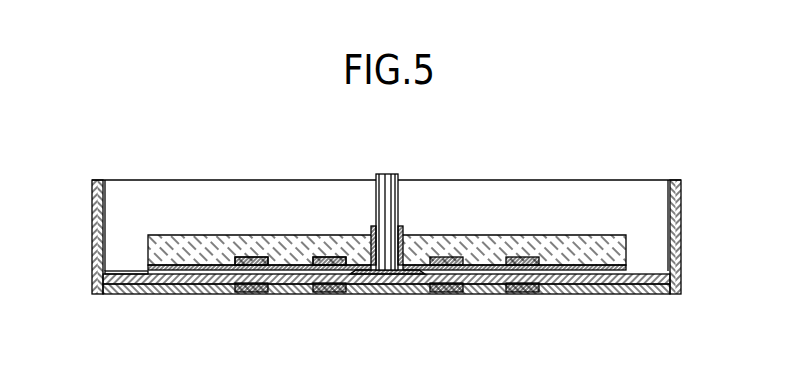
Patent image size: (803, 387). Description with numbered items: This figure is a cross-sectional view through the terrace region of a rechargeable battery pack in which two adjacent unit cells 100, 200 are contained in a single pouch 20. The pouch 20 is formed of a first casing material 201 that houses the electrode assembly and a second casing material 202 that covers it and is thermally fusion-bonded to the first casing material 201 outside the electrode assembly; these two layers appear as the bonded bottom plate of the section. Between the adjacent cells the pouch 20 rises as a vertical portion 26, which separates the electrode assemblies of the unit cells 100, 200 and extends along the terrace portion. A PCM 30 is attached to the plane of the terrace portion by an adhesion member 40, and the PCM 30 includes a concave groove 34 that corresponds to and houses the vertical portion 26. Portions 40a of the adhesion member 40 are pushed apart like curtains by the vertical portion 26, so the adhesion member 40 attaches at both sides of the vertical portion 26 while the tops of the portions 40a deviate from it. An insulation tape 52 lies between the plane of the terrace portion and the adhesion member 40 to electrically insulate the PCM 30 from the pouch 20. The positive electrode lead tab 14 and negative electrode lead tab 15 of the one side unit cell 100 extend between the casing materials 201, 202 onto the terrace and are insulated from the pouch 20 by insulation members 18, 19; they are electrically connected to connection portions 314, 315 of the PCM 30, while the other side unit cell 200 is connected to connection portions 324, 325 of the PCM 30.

The unit cell 100 is at (91, 233).
The unit cell 200 is at (683, 232).
The pouch 20 is at (386, 324).
The first casing material 201 is at (157, 284).
The second casing material 202 is at (175, 339).
The insulation tape 52 is at (120, 271).
The adhesion member 40 is at (200, 271).
The portions of the adhesion member 40a is at (371, 228).
The concave groove 34 is at (390, 279).
The PCM 30 is at (598, 246).
The vertical portion 26 is at (387, 174).
The positive electrode lead tab 14 is at (248, 266).
The negative electrode lead tab 15 is at (325, 266).
The insulation member 18 is at (263, 293).
The insulation member 19 is at (336, 293).
The connection portion 314 is at (252, 257).
The connection portion 315 is at (326, 257).
The connection portion 324 is at (521, 257).
The connection portion 325 is at (451, 257).